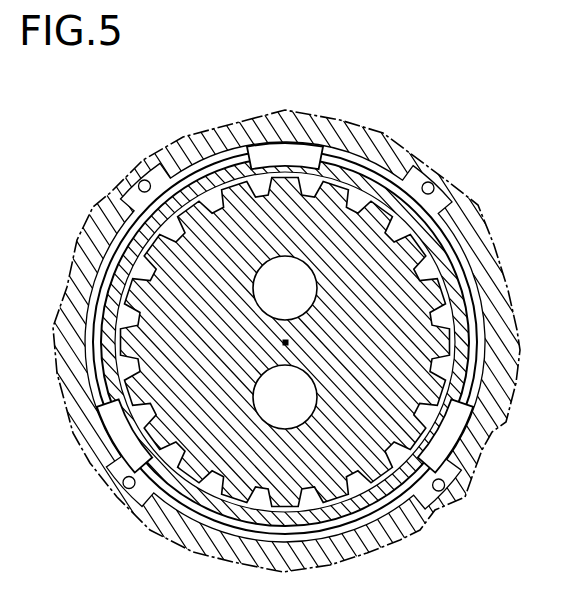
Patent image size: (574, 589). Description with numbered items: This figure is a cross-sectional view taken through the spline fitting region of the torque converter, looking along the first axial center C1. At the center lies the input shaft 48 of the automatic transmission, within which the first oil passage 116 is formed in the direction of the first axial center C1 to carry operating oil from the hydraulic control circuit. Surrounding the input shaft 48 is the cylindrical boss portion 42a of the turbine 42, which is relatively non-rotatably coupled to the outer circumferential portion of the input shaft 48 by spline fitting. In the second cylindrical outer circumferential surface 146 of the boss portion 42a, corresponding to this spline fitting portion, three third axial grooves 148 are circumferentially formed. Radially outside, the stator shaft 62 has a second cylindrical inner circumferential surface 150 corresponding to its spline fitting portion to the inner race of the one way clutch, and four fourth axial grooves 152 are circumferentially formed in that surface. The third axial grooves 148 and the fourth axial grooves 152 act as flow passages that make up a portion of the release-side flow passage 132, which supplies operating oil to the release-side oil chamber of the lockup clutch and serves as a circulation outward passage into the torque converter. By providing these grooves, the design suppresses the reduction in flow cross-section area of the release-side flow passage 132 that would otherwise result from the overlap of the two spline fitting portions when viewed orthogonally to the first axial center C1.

The stator shaft 62 is at (287, 294).
The turbine 42 is at (318, 342).
The boss portion 42a is at (448, 194).
The input shaft 48 is at (470, 263).
The second cylindrical outer circumferential surface 146 is at (415, 213).
The release-side flow passage 132 is at (287, 294).
The third axial grooves 148 is at (286, 168).
The fourth axial grooves 152 is at (422, 177).
The second cylindrical inner circumferential surface 150 is at (287, 294).
The first oil passage 116 is at (314, 283).
The first axial center C1 is at (289, 341).